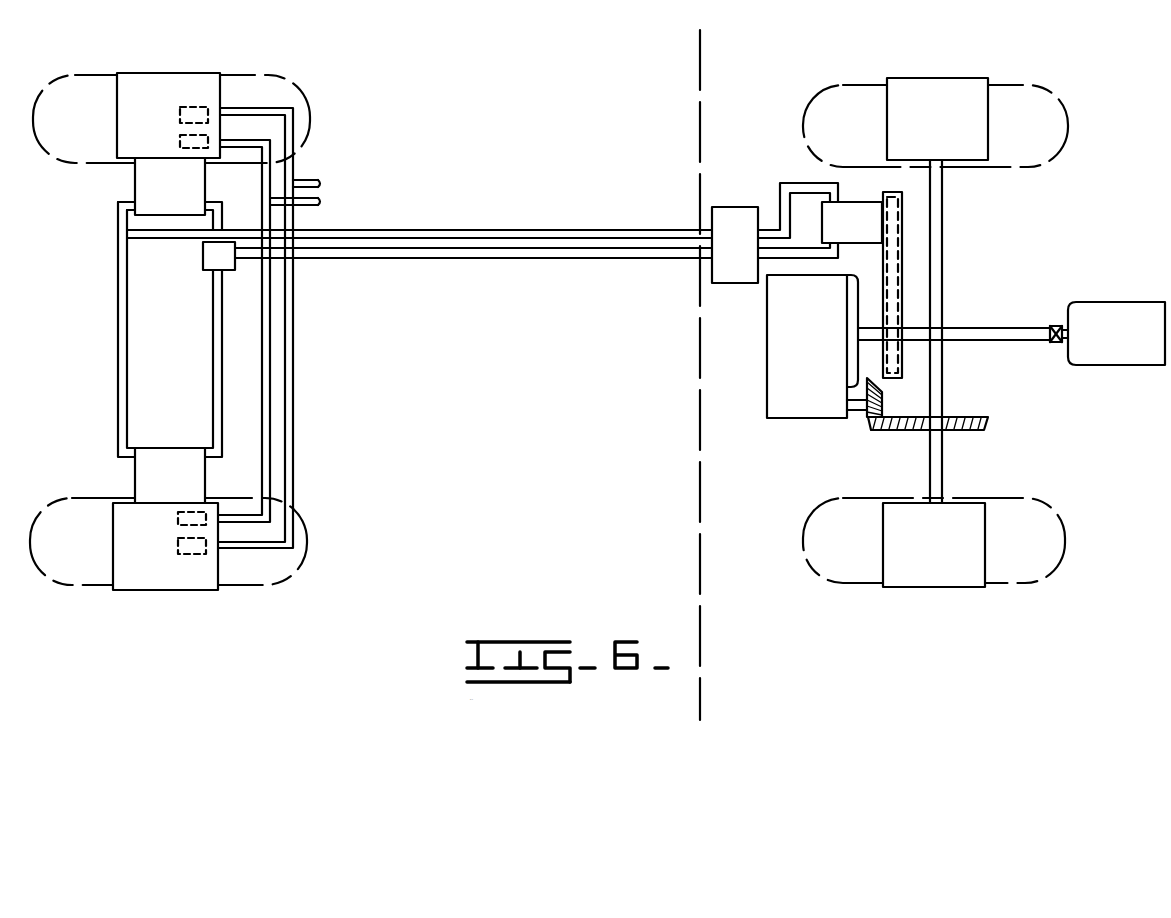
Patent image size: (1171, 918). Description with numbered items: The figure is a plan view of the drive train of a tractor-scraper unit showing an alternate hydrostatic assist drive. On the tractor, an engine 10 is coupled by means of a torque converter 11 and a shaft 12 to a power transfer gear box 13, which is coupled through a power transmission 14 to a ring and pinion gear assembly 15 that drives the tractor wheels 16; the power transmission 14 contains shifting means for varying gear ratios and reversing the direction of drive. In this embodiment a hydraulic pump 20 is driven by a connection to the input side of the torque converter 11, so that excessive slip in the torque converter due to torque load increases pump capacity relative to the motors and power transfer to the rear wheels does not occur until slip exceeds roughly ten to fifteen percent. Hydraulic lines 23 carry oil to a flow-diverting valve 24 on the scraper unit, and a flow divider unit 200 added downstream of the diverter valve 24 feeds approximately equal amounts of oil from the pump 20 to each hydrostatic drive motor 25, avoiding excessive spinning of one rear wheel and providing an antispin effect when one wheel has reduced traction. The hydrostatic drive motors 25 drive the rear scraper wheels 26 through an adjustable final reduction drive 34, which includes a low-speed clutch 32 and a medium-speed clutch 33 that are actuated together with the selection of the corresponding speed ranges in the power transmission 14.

The engine 10 is at (1135, 348).
The torque converter 11 is at (855, 300).
The shaft 12 is at (976, 334).
The power transfer gear box 13 is at (900, 192).
The power transmission 14 is at (827, 362).
The ring and pinion gear assembly 15 is at (866, 416).
The tractor wheels 16 is at (857, 137).
The hydraulic pump 20 is at (872, 236).
The hydraulic lines 23 is at (570, 232).
The flow-diverting valve 24 is at (756, 190).
The hydrostatic drive motors 25 is at (197, 203).
The rear scraper wheels 26 is at (94, 131).
The low-speed clutch 32 is at (180, 141).
The medium-speed clutch 33 is at (181, 110).
The adjustable final reduction drive 34 is at (211, 90).
The flow divider unit 200 is at (211, 274).